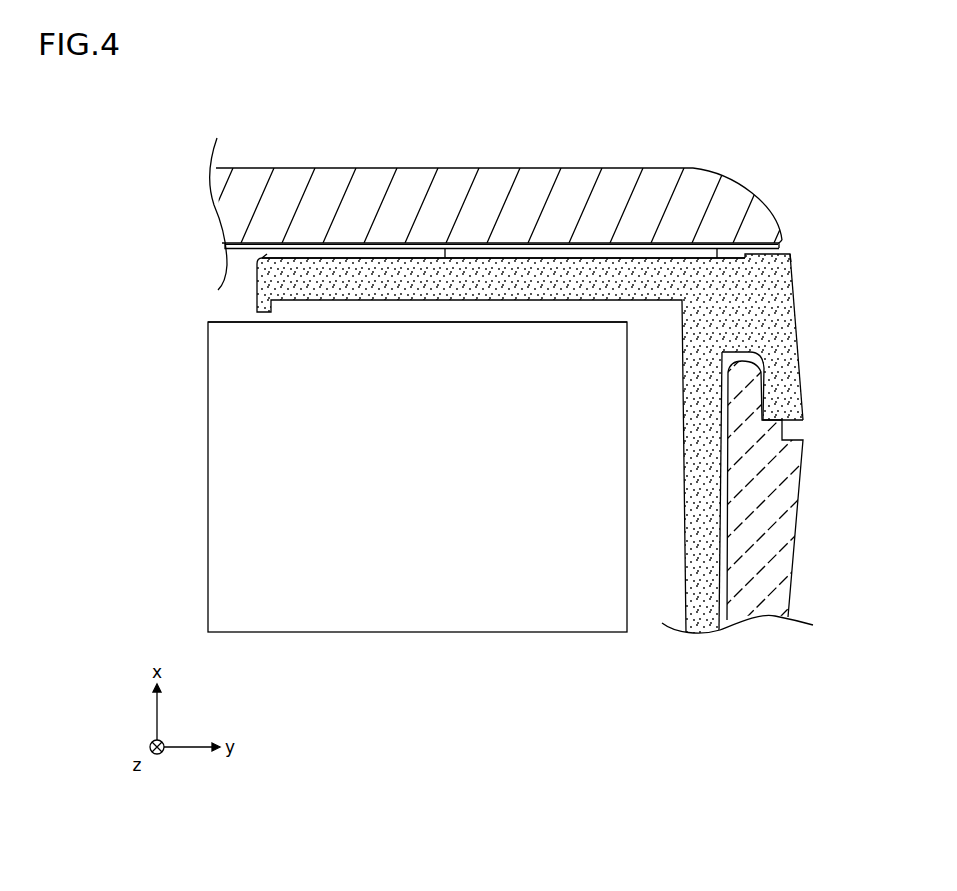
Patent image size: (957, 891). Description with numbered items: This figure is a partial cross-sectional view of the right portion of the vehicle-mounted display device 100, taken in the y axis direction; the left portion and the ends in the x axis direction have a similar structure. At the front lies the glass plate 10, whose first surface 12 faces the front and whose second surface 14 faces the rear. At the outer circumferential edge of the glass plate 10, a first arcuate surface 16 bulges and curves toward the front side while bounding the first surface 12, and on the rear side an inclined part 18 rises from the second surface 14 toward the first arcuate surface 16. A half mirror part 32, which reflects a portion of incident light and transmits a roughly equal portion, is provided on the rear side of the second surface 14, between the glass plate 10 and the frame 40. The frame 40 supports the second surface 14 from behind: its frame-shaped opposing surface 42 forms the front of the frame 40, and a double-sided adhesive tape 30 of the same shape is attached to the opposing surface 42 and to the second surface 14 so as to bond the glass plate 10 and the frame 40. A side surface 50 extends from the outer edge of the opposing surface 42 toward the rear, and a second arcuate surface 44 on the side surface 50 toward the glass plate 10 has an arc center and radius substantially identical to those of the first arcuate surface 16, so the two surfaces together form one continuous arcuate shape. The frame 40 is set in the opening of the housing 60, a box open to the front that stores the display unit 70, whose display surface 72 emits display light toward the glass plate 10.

The vehicle-mounted display device 100 is at (528, 775).
The glass plate 10 is at (228, 203).
The first surface 12 is at (262, 168).
The second surface 14 is at (223, 270).
The first arcuate surface 16 is at (741, 190).
The inclined part 18 is at (778, 240).
The double-sided adhesive tape 30 is at (522, 252).
The half mirror part 32 is at (267, 252).
The frame 40 is at (780, 315).
The opposing surface 42 is at (353, 262).
The second arcuate surface 44 is at (792, 257).
The side surface 50 is at (803, 363).
The housing 60 is at (780, 532).
The display unit 70 is at (362, 612).
The display surface 72 is at (580, 320).